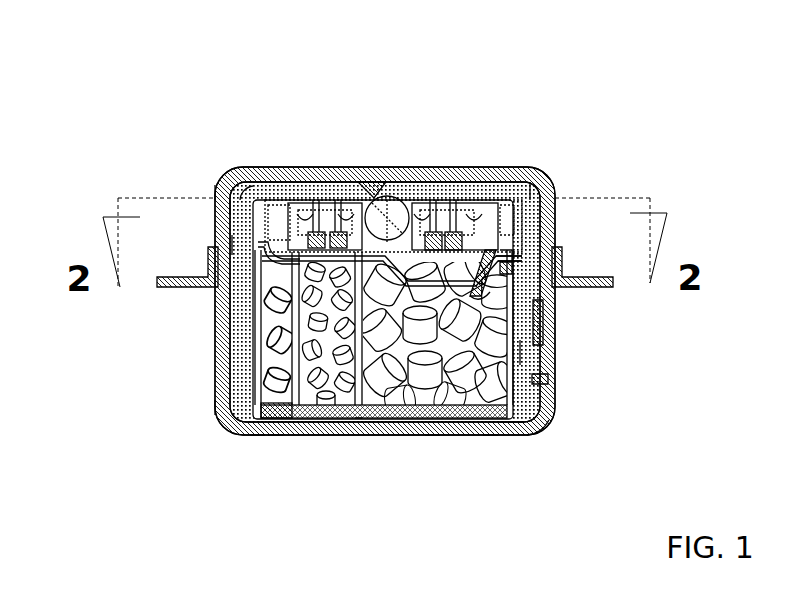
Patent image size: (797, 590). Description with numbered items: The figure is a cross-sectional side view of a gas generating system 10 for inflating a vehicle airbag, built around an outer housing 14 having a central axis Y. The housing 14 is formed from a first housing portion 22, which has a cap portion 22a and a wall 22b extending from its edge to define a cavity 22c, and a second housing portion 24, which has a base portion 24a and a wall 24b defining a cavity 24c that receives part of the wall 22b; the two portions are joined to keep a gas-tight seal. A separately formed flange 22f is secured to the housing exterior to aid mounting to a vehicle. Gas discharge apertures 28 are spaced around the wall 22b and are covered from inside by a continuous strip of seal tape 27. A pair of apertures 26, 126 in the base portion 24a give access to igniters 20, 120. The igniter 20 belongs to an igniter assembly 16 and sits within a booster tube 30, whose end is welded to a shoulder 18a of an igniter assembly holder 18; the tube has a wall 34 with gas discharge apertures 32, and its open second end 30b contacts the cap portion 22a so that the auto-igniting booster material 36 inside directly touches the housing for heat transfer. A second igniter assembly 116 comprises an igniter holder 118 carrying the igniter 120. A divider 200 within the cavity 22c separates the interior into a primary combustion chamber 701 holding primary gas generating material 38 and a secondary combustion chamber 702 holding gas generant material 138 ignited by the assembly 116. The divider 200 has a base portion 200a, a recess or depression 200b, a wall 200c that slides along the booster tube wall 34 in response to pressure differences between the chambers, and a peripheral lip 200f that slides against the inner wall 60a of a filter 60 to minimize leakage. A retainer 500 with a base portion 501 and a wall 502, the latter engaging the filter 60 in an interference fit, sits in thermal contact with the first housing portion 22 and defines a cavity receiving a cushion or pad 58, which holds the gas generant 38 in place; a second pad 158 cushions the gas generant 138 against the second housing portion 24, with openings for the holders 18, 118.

The gas generating system 10 is at (492, 301).
The outer housing 14 is at (230, 192).
The igniter assembly 16 is at (344, 180).
The igniter assembly holder 18 is at (364, 180).
The shoulder 18a is at (278, 172).
The igniter 20 is at (318, 180).
The first housing portion 22 is at (231, 437).
The cap portion 22a is at (275, 437).
The wall 22b is at (217, 367).
The cavity 22c is at (218, 418).
The flange 22f is at (157, 280).
The second housing portion 24 is at (540, 160).
The base portion 24a is at (247, 175).
The wall 24b is at (222, 242).
The cavity 24c is at (540, 180).
The aperture 26 is at (309, 172).
The seal tape 27 is at (537, 352).
The gas discharge apertures 28 is at (258, 334).
The booster tube 30 is at (295, 433).
The second end 30b is at (357, 433).
The gas discharge apertures 32 is at (363, 433).
The wall 34 is at (262, 344).
The booster material 36 is at (329, 435).
The primary gas generating material 38 is at (487, 440).
The cushion or pad 58 is at (258, 437).
The filter 60 is at (540, 378).
The inner wall 60a is at (510, 388).
The second igniter assembly 116 is at (416, 175).
The igniter holder 118 is at (478, 180).
The igniter 120 is at (448, 180).
The aperture 126 is at (451, 180).
The gas generant material 138 is at (218, 190).
The second cushion or pad 158 is at (496, 180).
The divider 200 is at (560, 262).
The base portion 200a is at (553, 248).
The recess or depression 200b is at (540, 300).
The wall 200c is at (268, 276).
The lip or flange 200f is at (553, 232).
The retainer 500 is at (537, 430).
The base portion 501 is at (490, 440).
The wall 502 is at (543, 425).
The primary combustion chamber 701 is at (433, 437).
The secondary combustion chamber 702 is at (553, 200).
The central axis Y is at (363, 438).